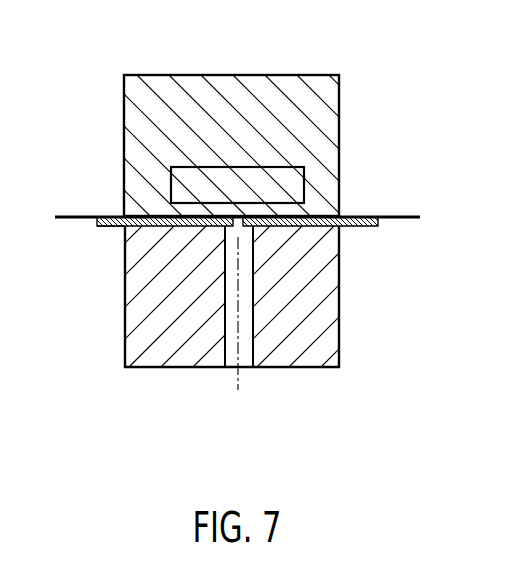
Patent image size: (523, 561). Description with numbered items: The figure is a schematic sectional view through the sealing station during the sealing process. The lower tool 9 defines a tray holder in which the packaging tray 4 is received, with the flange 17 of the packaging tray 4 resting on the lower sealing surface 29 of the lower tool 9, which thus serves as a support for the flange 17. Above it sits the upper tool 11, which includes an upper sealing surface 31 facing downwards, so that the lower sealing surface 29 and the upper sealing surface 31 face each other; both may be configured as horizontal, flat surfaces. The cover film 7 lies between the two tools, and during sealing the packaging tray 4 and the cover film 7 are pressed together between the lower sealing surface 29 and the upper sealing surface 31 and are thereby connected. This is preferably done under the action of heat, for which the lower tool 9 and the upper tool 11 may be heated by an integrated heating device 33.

The upper tool 11 is at (368, 93).
The heating device 33 is at (217, 175).
The lower tool 9 is at (366, 323).
The lower sealing surface 29 is at (175, 226).
The cover film 7 is at (65, 216).
The flange 17 is at (362, 226).
The packaging tray 4 is at (107, 226).
The upper sealing surface 31 is at (320, 216).